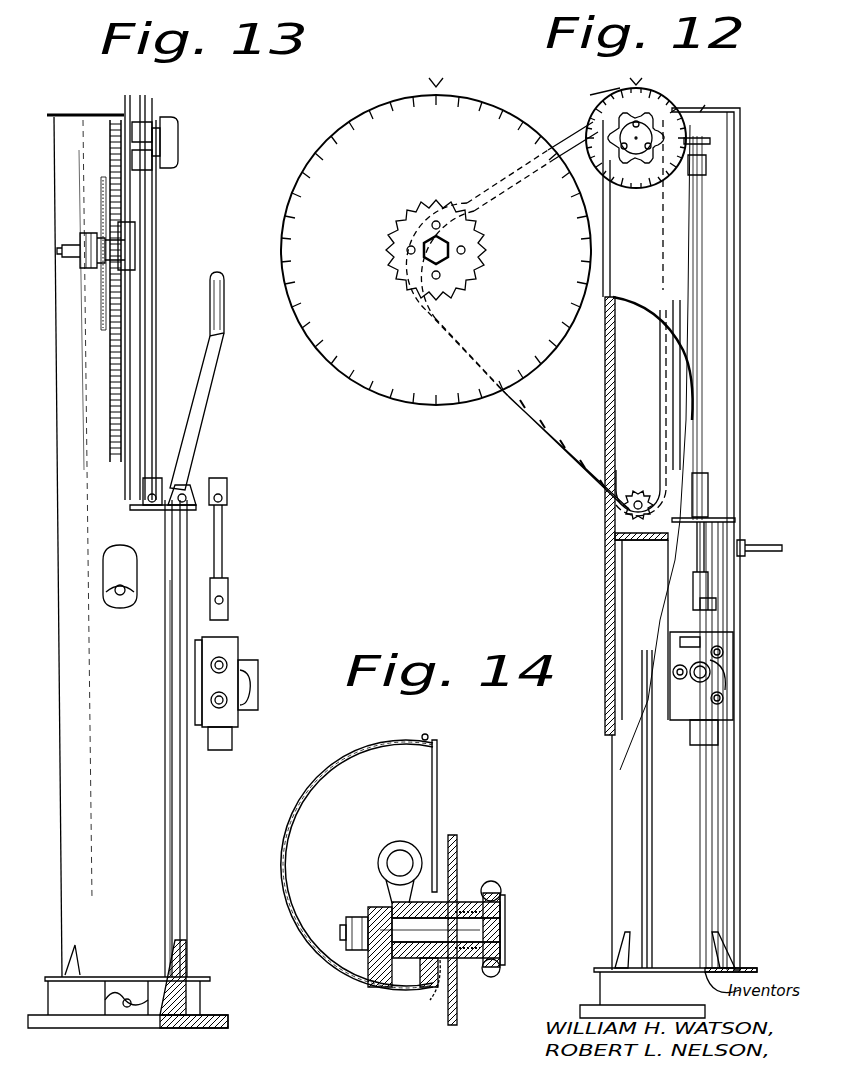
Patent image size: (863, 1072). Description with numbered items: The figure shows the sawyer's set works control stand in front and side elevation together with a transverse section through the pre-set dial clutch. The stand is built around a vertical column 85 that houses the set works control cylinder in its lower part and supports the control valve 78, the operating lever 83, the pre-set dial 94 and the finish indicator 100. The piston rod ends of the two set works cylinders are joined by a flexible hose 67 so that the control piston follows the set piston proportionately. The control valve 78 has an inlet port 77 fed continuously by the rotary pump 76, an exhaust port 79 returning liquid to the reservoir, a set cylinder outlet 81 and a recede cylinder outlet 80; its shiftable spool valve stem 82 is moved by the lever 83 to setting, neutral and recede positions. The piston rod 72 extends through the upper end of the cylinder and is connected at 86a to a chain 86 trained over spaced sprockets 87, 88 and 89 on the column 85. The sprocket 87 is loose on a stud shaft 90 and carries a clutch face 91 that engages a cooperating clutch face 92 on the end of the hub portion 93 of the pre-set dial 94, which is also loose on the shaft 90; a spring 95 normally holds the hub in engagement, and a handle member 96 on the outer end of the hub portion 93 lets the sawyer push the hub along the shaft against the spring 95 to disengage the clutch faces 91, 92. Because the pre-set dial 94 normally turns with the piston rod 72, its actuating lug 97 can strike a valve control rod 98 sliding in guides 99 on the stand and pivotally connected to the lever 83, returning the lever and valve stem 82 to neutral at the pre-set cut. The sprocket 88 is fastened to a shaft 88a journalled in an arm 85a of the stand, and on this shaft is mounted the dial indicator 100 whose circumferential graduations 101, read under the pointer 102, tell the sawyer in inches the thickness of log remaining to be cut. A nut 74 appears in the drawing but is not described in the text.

In FIG. 12, the flexible hose 67 is at (758, 550).
In FIG. 12, the piston rod 72 is at (672, 442).
In FIG. 13, the nut 74 is at (175, 150).
In FIG. 12, the rotary pump 76 is at (632, 565).
In FIG. 12, the inlet port 77 is at (733, 675).
In FIG. 13, the control valve 78 is at (236, 652).
In FIG. 12, the control valve 78 is at (705, 640).
In FIG. 13, the exhaust port 79 is at (255, 682).
In FIG. 12, the exhaust port 79 is at (722, 660).
In FIG. 13, the recede cylinder outlet 80 is at (238, 707).
In FIG. 12, the recede cylinder outlet 80 is at (670, 692).
In FIG. 13, the set cylinder outlet 81 is at (240, 664).
In FIG. 12, the set cylinder outlet 81 is at (670, 660).
In FIG. 13, the spool valve stem 82 is at (228, 624).
In FIG. 13, the lever 83 is at (192, 448).
In FIG. 13, the vertical column 85 is at (165, 822).
In FIG. 12, the vertical column 85 is at (580, 178).
In FIG. 13, the arm 85a is at (95, 198).
In FIG. 12, the arm 85a is at (595, 200).
In FIG. 13, the chain 86 is at (110, 382).
In FIG. 12, the chain 86 is at (520, 430).
In FIG. 12, the connection 86a is at (665, 374).
In FIG. 12, the sprocket 87 is at (675, 128).
In FIG. 14, the sprocket 87 is at (395, 900).
In FIG. 12, the sprocket 88 is at (470, 268).
In FIG. 13, the shaft 88a is at (68, 260).
In FIG. 12, the shaft 88a is at (448, 243).
In FIG. 12, the sprocket 89 is at (620, 507).
In FIG. 14, the stud shaft 90 is at (460, 928).
In FIG. 14, the clutch face 91 is at (415, 967).
In FIG. 14, the clutch face 92 is at (440, 870).
In FIG. 14, the hub portion 93 is at (445, 967).
In FIG. 13, the pre-set dial 94 is at (148, 105).
In FIG. 12, the pre-set dial 94 is at (612, 100).
In FIG. 14, the pre-set dial 94 is at (460, 1006).
In FIG. 14, the spring 95 is at (502, 898).
In FIG. 13, the handle member 96 is at (180, 126).
In FIG. 12, the handle member 96 is at (648, 118).
In FIG. 14, the handle member 96 is at (497, 884).
In FIG. 12, the actuating lug 97 is at (712, 142).
In FIG. 13, the valve control rod 98 is at (152, 300).
In FIG. 12, the valve control rod 98 is at (705, 234).
In FIG. 12, the guides 99 is at (708, 165).
In FIG. 13, the dial indicator 100 is at (126, 101).
In FIG. 12, the dial indicator 100 is at (385, 395).
In FIG. 12, the circumferential graduations 101 is at (412, 115).
In FIG. 12, the pointer 102 is at (433, 80).